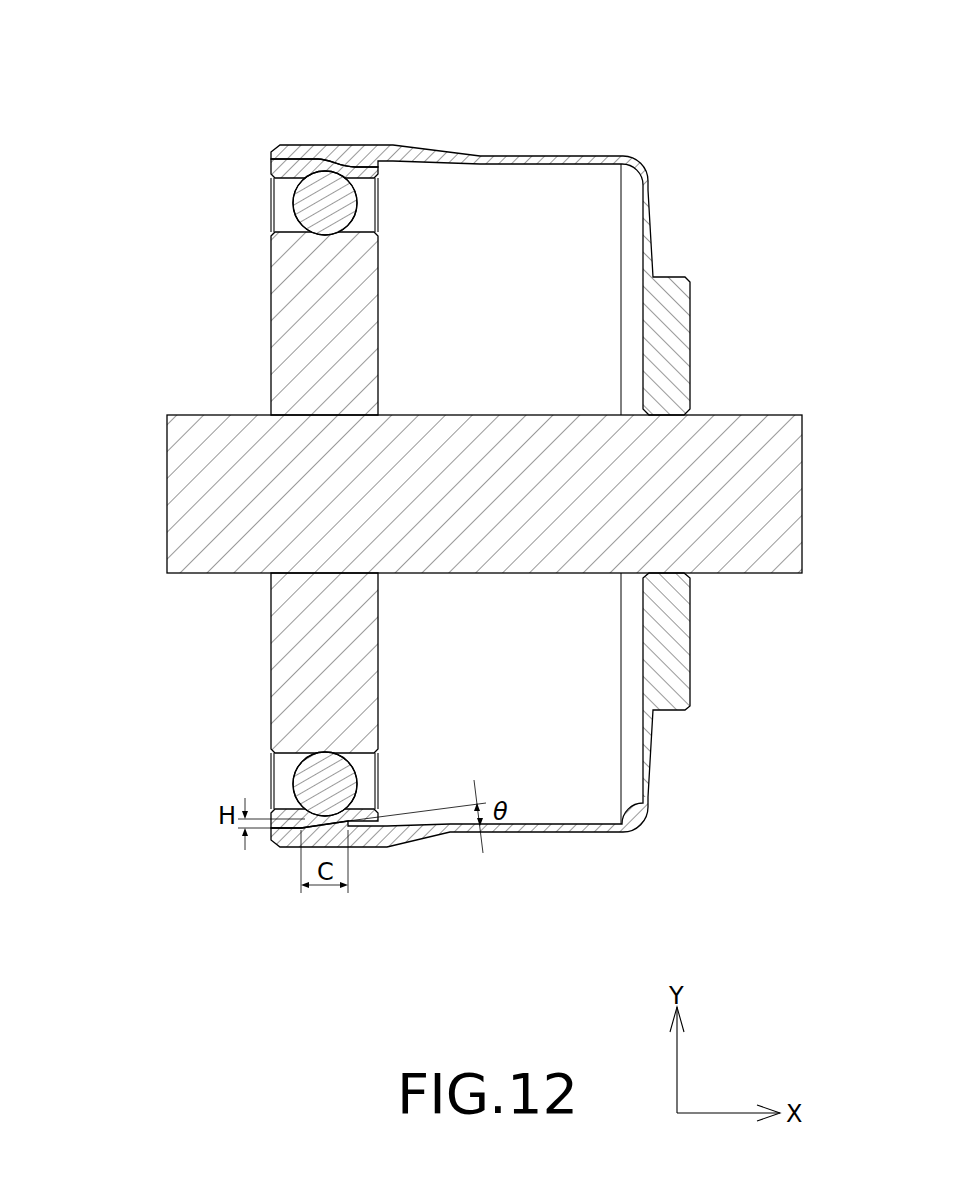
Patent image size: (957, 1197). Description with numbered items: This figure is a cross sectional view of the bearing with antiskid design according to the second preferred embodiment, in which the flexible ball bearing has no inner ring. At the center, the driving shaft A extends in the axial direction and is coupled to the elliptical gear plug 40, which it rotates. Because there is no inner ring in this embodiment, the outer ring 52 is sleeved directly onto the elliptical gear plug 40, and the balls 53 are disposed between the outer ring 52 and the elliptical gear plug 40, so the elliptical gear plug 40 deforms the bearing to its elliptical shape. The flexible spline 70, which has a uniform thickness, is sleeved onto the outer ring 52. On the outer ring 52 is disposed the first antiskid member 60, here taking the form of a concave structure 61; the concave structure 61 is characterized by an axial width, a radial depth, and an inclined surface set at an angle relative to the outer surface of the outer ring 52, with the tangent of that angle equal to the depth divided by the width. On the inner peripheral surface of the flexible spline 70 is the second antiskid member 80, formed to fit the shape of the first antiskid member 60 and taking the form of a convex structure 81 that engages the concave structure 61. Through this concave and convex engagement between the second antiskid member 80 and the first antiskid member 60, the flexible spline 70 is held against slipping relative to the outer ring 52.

The driving shaft A is at (193, 416).
The elliptical gear plug 40 is at (271, 453).
The outer ring 52 is at (290, 167).
The balls 53 is at (327, 203).
The flexible spline 70 is at (480, 433).
The second antiskid member 80 is at (332, 443).
The convex structure 81 is at (328, 153).
The first antiskid member 60 is at (440, 473).
The concave structure 61 is at (353, 168).